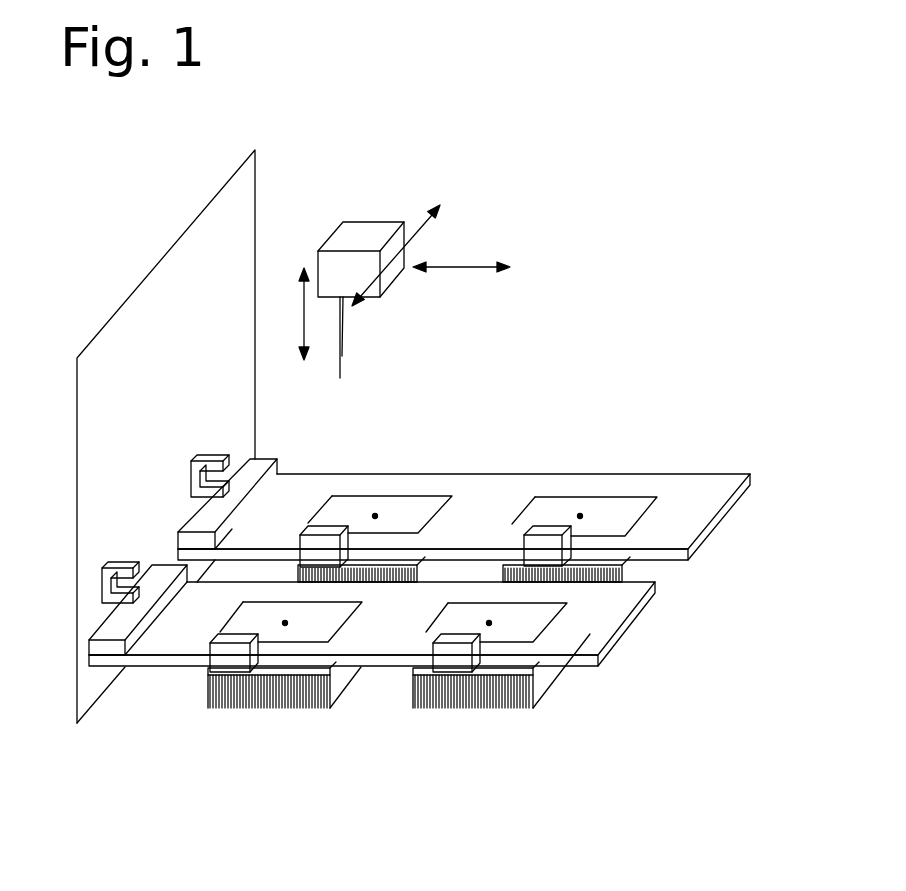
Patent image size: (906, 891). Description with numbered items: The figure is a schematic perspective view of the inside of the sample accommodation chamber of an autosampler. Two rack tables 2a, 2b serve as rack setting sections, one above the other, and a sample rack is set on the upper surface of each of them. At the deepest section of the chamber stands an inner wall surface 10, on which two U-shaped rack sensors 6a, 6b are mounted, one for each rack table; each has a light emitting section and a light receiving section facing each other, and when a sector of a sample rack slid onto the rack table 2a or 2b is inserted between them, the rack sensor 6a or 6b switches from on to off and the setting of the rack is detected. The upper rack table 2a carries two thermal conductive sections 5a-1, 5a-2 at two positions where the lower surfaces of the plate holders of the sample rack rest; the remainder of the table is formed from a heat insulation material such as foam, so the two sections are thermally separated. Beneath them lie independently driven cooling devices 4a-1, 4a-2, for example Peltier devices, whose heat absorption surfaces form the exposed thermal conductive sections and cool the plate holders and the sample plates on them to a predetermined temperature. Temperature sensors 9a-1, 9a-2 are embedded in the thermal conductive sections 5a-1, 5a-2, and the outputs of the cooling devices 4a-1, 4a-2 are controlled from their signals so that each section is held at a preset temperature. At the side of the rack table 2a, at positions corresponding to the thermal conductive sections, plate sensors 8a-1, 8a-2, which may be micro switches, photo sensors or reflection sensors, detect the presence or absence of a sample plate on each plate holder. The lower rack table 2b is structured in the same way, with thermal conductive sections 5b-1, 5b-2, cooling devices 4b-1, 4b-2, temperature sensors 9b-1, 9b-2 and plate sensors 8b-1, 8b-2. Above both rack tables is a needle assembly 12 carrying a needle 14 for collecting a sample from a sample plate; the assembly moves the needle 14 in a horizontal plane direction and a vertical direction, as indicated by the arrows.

The inner wall surface 10 is at (95, 408).
The needle assembly 12 is at (382, 228).
The needle 14 is at (345, 333).
The rack table 2a is at (705, 500).
The rack table 2b is at (616, 620).
The rack sensor 6a is at (213, 455).
The rack sensor 6b is at (123, 562).
The cooling device 4a-1 is at (382, 566).
The cooling device 4a-2 is at (623, 567).
The cooling device 4b-1 is at (283, 672).
The cooling device 4b-2 is at (535, 672).
The thermal conductive section 5a-1 is at (433, 503).
The thermal conductive section 5a-2 is at (630, 512).
The thermal conductive section 5b-1 is at (330, 625).
The thermal conductive section 5b-2 is at (528, 625).
The plate sensor 8a-1 is at (322, 528).
The plate sensor 8a-2 is at (545, 528).
The plate sensor 8b-1 is at (228, 658).
The plate sensor 8b-2 is at (452, 655).
The temperature sensor 9a-1 is at (375, 514).
The temperature sensor 9a-2 is at (581, 515).
The temperature sensor 9b-1 is at (285, 624).
The temperature sensor 9b-2 is at (490, 624).